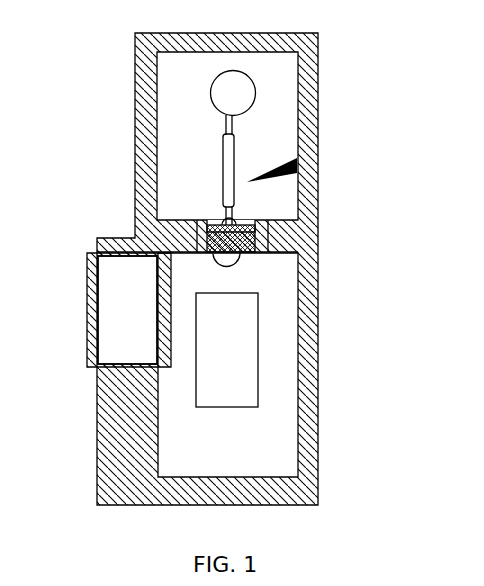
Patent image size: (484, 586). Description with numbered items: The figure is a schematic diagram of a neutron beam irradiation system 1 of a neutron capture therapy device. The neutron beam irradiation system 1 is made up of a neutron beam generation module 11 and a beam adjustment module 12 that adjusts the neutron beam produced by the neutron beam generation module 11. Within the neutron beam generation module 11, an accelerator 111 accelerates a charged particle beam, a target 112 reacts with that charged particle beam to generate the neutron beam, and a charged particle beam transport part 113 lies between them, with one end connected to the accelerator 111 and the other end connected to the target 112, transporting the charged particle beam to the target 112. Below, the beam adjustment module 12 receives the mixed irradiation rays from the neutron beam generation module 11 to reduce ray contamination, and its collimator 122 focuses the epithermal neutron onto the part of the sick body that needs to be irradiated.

The neutron beam irradiation system 1 is at (228, 269).
The neutron beam generation module 11 is at (228, 143).
The accelerator 111 is at (232, 98).
The target 112 is at (245, 226).
The charged particle beam transport part 113 is at (223, 193).
The beam adjustment module 12 is at (255, 269).
The collimator 122 is at (232, 263).